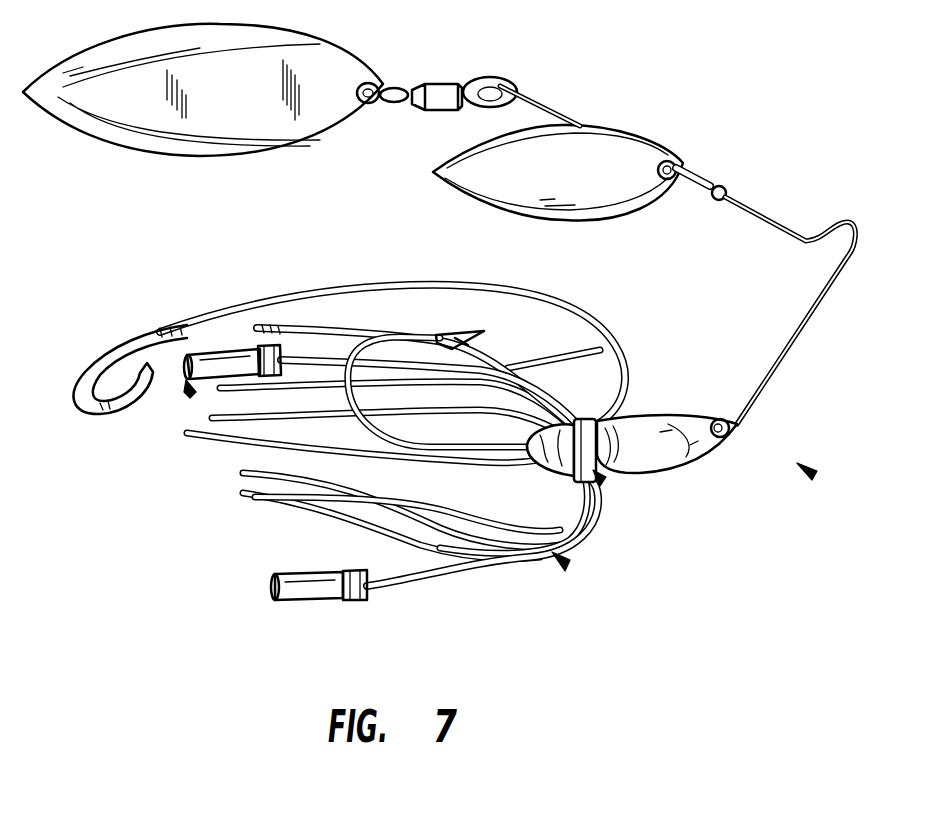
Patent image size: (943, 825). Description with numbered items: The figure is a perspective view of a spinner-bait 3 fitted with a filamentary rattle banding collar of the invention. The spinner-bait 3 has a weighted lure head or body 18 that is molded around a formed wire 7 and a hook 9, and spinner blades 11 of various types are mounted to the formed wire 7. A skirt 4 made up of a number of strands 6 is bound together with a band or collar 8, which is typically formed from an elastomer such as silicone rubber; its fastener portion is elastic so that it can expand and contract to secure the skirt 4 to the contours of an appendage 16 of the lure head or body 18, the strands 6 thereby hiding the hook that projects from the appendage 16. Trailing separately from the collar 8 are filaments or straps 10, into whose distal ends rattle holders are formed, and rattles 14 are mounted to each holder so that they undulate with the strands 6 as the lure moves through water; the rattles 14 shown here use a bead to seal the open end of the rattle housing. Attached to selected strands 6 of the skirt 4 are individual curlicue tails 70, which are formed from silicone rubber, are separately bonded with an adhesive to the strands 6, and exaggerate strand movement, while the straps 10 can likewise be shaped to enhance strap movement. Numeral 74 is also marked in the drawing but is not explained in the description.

The spinner-bait 3 is at (816, 476).
The skirt 4 is at (567, 567).
The strands 6 is at (262, 498).
The formed wire 7 is at (822, 296).
The band or collar 8 is at (603, 480).
The hook 9 is at (420, 334).
The filaments or straps 10 is at (297, 357).
The spinner blades 11 is at (297, 148).
The rattles 14 is at (317, 601).
The appendage 16 is at (541, 432).
The lure head or body 18 is at (672, 413).
The curlicue tails 70 is at (85, 360).
The trailer hook point 74 is at (185, 397).